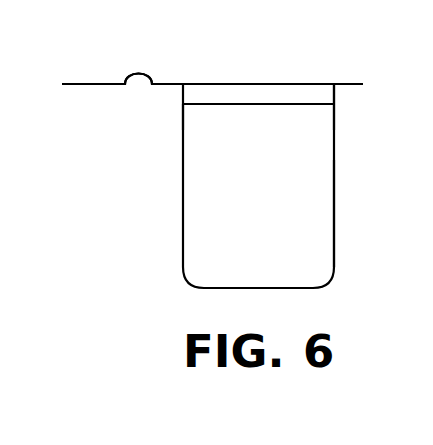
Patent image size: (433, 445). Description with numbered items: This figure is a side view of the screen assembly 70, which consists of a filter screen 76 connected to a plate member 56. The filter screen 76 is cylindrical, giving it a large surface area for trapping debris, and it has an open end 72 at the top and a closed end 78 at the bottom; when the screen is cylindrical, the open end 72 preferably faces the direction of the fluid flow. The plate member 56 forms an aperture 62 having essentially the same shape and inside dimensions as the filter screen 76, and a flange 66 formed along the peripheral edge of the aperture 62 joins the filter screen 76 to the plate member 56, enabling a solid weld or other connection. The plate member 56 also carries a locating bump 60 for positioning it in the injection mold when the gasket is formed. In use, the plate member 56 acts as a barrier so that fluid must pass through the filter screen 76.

The plate member 56 is at (89, 85).
The locating bump 60 is at (150, 77).
The aperture 62 is at (183, 95).
The flange 66 is at (183, 104).
The screen assembly 70 is at (183, 190).
The open end 72 is at (334, 92).
The filter screen 76 is at (334, 197).
The closed end 78 is at (257, 288).